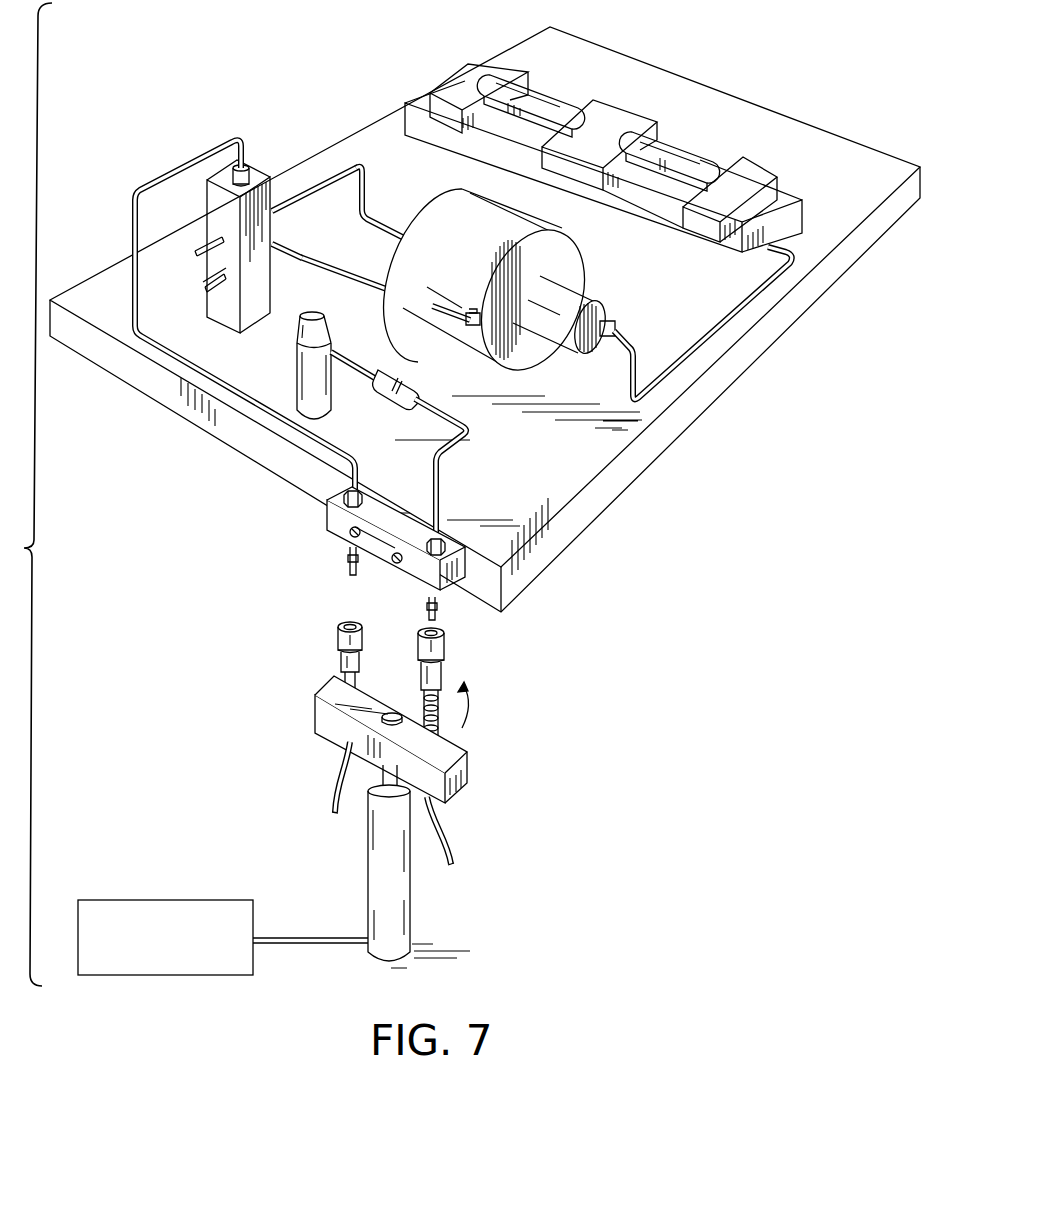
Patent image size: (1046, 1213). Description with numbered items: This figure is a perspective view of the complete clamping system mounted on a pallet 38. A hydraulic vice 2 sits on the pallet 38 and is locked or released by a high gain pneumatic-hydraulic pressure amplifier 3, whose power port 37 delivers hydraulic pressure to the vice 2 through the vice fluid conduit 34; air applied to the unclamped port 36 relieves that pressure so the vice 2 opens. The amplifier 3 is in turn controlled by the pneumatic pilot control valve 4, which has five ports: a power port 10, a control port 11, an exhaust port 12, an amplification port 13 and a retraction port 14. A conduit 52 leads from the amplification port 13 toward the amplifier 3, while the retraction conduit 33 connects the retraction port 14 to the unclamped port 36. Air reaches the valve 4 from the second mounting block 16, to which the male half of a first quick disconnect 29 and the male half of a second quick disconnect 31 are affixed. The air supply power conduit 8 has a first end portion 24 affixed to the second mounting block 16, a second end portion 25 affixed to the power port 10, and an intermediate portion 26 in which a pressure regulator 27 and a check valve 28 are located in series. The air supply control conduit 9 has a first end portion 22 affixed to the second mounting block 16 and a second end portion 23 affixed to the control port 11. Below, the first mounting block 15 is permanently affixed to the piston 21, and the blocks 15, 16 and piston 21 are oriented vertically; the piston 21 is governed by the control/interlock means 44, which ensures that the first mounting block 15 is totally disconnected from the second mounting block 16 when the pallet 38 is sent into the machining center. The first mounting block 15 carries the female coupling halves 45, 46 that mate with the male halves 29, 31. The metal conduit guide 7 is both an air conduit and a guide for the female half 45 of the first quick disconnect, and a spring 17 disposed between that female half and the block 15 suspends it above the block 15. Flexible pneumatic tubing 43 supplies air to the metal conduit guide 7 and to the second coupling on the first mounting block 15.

The hydraulic vice 2 is at (757, 168).
The pneumatic-hydraulic pressure amplifier 3 is at (581, 258).
The pneumatic pilot control valve 4 is at (264, 174).
The metal conduit guide 7 is at (446, 712).
The air supply power conduit 8 is at (458, 442).
The air supply control conduit 9 is at (258, 403).
The power port 10 is at (207, 271).
The control port 11 is at (232, 174).
The exhaust port 12 is at (210, 233).
The amplification port 13 is at (277, 200).
The retraction port 14 is at (276, 248).
The first mounting block 15 is at (467, 775).
The second mounting block 16 is at (328, 530).
The spring 17 is at (447, 730).
The piston 21 is at (380, 780).
The first end portion 22 is at (334, 496).
The second end portion 23 is at (253, 142).
The first end portion 24 is at (444, 540).
The second end portion 25 is at (210, 288).
The intermediate portion 26 is at (360, 376).
The pressure regulator 27 is at (331, 333).
The check valve 28 is at (398, 380).
The male half of first quick disconnect 29 is at (440, 613).
The male half of second quick disconnect 31 is at (347, 566).
The retraction conduit 33 is at (318, 258).
The vice fluid conduit 34 is at (707, 337).
The unclamped port 36 is at (478, 326).
The power port 37 is at (590, 342).
The pallet 38 is at (703, 87).
The flexible pneumatic tubing 43 is at (345, 762).
The control/interlock unit 44 is at (203, 975).
The fitting 45 is at (448, 648).
The fitting 46 is at (336, 635).
The tube bend 52 is at (370, 190).